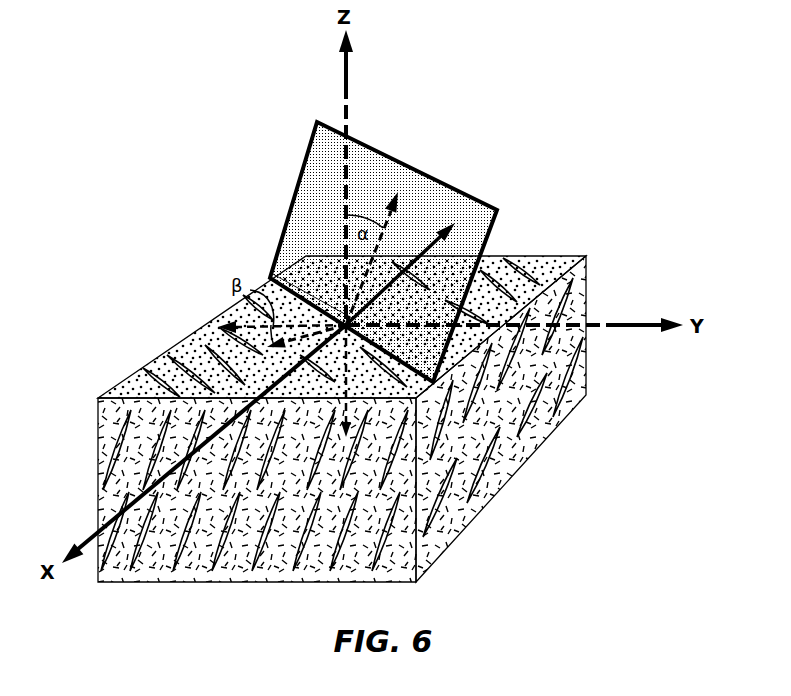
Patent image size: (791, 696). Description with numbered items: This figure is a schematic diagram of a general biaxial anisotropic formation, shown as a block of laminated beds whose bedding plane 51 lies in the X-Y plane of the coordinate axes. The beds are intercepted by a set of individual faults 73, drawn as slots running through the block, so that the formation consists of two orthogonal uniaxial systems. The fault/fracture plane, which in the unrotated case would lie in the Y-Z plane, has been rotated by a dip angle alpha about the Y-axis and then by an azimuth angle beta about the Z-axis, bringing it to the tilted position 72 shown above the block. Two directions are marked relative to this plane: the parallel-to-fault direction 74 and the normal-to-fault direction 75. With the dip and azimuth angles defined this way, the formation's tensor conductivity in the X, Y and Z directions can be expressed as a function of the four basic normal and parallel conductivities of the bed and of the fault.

The bedding plane 51 is at (145, 370).
The fault/fracture plane position 72 is at (477, 200).
The individual faults 73 is at (527, 430).
The parallel-to-fault direction 74 is at (388, 222).
The normal-to-fault direction 75 is at (268, 345).